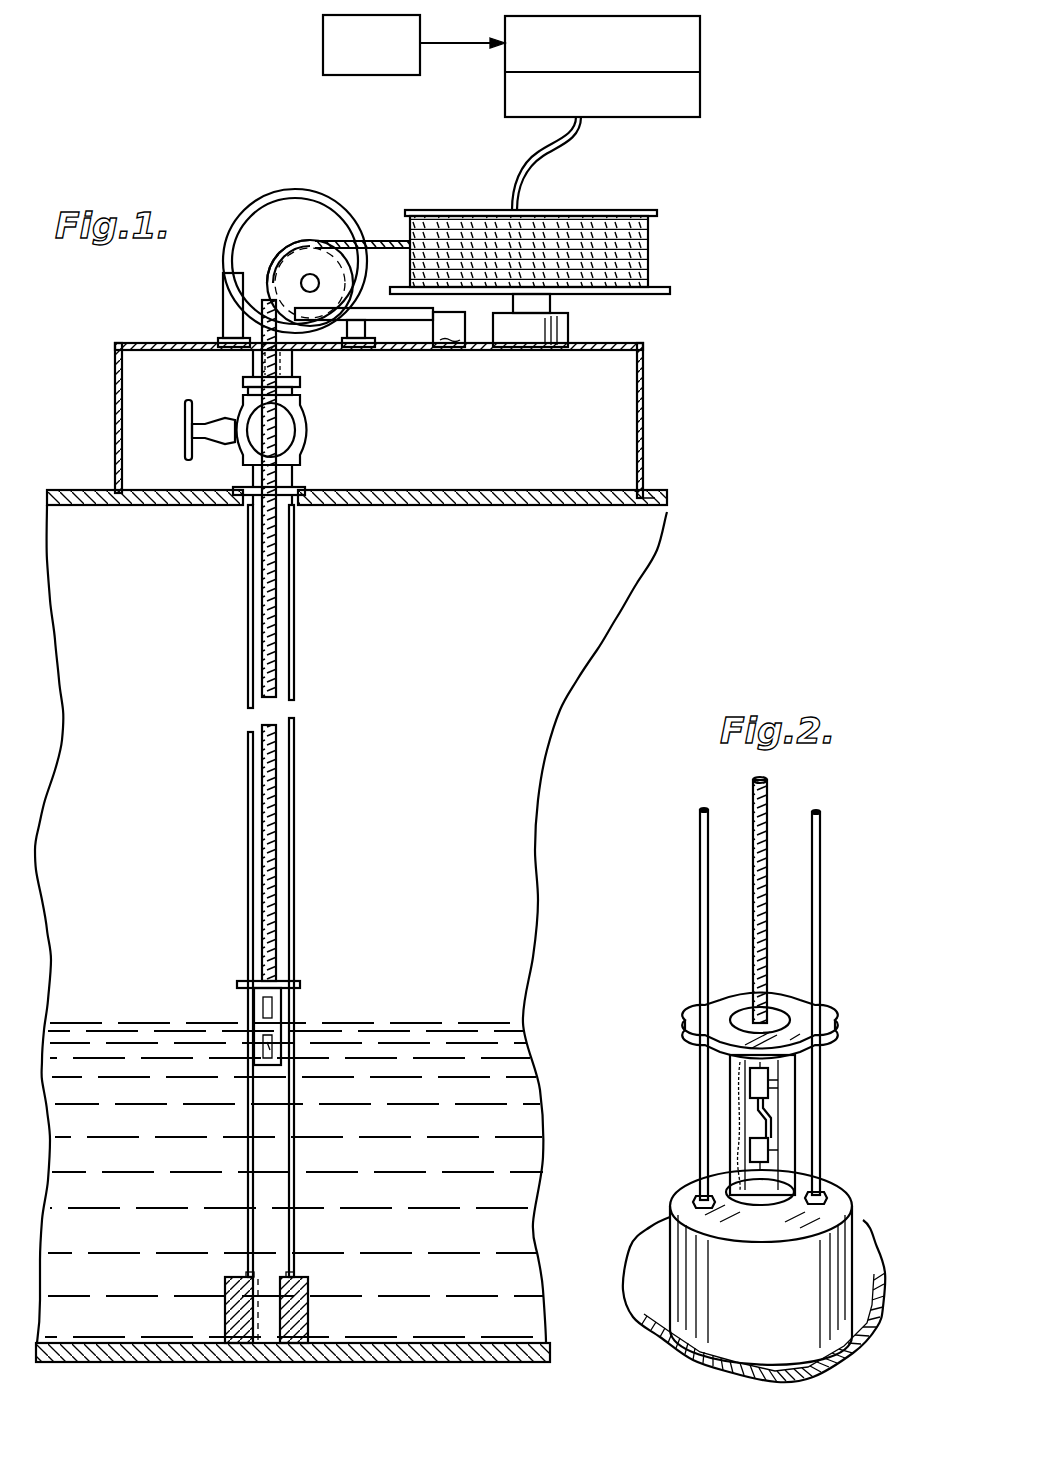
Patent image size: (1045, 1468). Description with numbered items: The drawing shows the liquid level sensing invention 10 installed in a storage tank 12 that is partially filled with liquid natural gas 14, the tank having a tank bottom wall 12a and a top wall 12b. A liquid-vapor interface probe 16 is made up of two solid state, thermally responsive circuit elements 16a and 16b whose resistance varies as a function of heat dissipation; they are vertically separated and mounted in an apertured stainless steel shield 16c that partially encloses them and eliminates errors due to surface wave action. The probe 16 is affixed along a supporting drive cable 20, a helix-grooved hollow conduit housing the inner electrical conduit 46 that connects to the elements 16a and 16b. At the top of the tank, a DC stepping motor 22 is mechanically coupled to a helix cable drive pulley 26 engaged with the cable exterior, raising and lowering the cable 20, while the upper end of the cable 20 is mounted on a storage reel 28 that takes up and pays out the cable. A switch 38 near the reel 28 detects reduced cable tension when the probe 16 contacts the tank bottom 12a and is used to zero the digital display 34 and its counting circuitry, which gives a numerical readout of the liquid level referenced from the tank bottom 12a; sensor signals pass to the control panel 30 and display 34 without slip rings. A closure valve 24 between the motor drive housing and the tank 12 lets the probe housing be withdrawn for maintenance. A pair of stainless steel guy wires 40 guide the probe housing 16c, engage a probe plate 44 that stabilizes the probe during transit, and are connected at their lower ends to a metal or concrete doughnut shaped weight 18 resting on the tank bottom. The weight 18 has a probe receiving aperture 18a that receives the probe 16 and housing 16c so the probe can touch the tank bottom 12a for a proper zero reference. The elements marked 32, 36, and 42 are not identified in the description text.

In FIG. 1, the instant invention 10 is at (125, 322).
In FIG. 1, the storage tank 12 is at (406, 770).
In FIG. 1, the tank bottom wall 12a is at (533, 1340).
In FIG. 2, the tank bottom wall 12a is at (665, 1232).
In FIG. 1, the top wall 12b is at (668, 508).
In FIG. 1, the liquid natural gas 14 is at (466, 1170).
In FIG. 1, the liquid-vapor interface probe 16 is at (282, 1012).
In FIG. 1, the solid state circuit element 16a is at (263, 1006).
In FIG. 2, the solid state circuit element 16a is at (762, 1082).
In FIG. 1, the solid state circuit element 16b is at (262, 1062).
In FIG. 2, the solid state circuit element 16b is at (766, 1157).
In FIG. 2, the stainless steel shield 16c is at (787, 1112).
In FIG. 1, the doughnut shaped weight 18 is at (308, 1282).
In FIG. 2, the doughnut shaped weight 18 is at (842, 1245).
In FIG. 1, the probe receiving aperture 18a is at (288, 1298).
In FIG. 2, the probe receiving aperture 18a is at (706, 1197).
In FIG. 1, the drive cable 20 is at (349, 243).
In FIG. 2, the drive cable 20 is at (770, 790).
In FIG. 1, the electric motor 22 is at (300, 190).
In FIG. 1, the closure valve 24 is at (318, 428).
In FIG. 1, the helix drive gear 26 is at (266, 247).
In FIG. 1, the storage reel 28 is at (613, 210).
In FIG. 1, the control panel 30 is at (702, 36).
In FIG. 1, the power supply 32 is at (418, 17).
In FIG. 1, the digital display 34 is at (702, 90).
In FIG. 1, the housing 36 is at (648, 408).
In FIG. 1, the switch 38 is at (449, 329).
In FIG. 1, the guy wires 40 is at (248, 640).
In FIG. 2, the guy wires 40 is at (700, 885).
In FIG. 2, the sensor lead wire 42 is at (768, 1137).
In FIG. 1, the probe plate 44 is at (301, 983).
In FIG. 2, the probe plate 44 is at (832, 1005).
In FIG. 1, the inner electrical conduit 46 is at (528, 162).